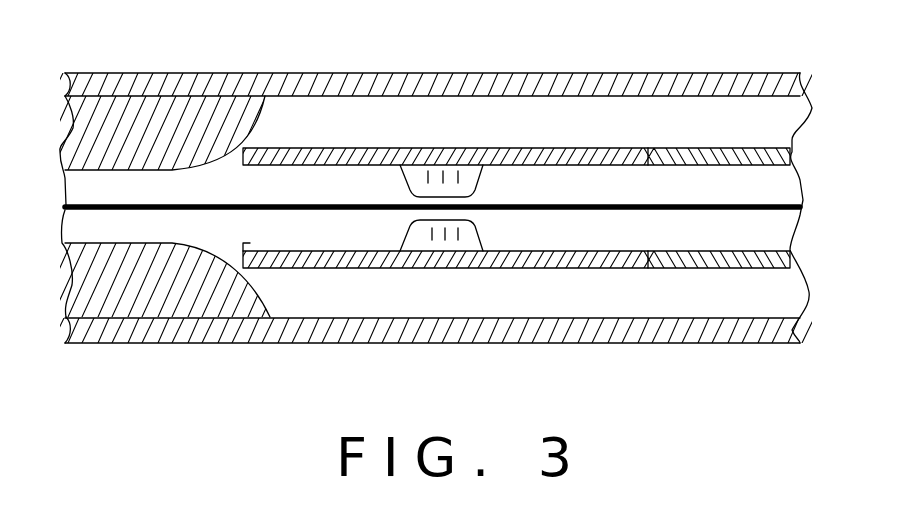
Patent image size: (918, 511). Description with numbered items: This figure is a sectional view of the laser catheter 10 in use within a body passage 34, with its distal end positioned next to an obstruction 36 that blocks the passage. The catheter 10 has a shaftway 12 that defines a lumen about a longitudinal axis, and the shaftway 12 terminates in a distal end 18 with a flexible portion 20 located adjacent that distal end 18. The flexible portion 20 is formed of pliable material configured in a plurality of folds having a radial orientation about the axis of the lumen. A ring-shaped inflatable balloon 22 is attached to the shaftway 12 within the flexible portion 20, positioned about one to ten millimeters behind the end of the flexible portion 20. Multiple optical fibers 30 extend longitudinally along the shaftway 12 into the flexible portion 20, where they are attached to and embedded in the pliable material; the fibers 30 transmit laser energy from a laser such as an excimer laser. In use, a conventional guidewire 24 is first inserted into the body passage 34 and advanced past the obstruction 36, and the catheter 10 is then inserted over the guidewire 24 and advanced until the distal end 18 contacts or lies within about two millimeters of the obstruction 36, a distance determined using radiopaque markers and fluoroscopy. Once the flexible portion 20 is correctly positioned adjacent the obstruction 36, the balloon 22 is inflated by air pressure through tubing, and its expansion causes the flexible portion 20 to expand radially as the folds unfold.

The laser catheter 10 is at (601, 133).
The shaftway 12 is at (772, 260).
The distal end 18 is at (307, 137).
The flexible portion 20 is at (377, 270).
The inflatable balloon 22 is at (452, 240).
The guidewire 24 is at (727, 205).
The optical fibers 30 is at (272, 250).
The body passage 34 is at (447, 120).
The obstruction 36 is at (200, 120).